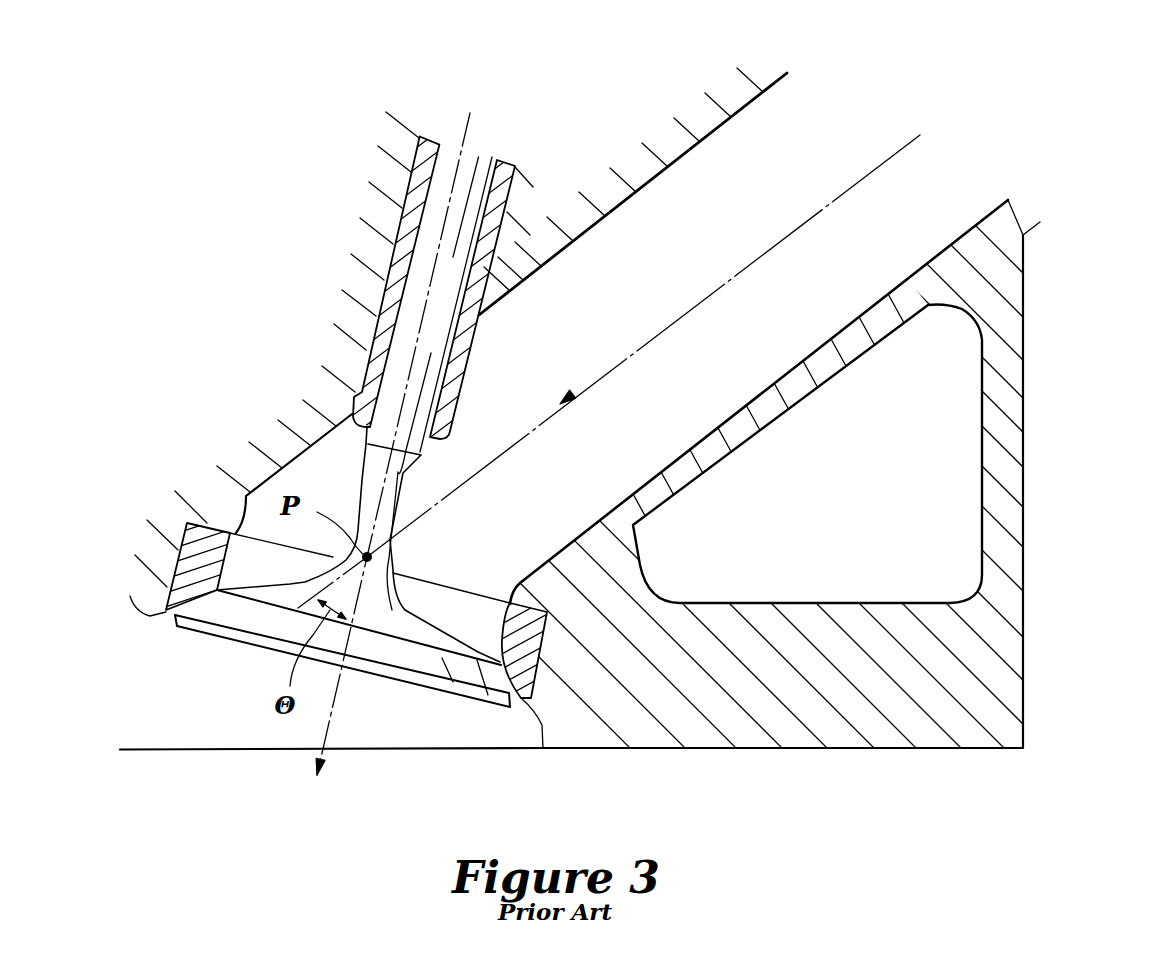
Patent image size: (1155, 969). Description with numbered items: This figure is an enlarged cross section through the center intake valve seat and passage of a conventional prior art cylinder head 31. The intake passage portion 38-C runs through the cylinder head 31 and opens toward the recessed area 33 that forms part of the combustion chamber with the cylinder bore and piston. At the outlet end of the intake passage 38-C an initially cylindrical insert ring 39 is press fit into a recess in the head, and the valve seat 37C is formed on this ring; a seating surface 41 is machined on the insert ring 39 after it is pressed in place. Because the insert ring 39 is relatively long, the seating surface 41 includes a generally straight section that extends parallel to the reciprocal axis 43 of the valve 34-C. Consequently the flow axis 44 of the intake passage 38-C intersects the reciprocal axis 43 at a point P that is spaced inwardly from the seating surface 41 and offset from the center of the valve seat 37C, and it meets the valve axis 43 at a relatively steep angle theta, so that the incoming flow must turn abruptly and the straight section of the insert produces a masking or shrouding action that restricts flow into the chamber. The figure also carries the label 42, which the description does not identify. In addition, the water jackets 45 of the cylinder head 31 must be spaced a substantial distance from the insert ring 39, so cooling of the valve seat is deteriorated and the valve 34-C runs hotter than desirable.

The cylinder head 31 is at (1016, 611).
The recessed area 33 is at (125, 734).
The valve 34-C is at (402, 677).
The valve seat 37C is at (192, 597).
The intake passage portion 38-C is at (893, 260).
The insert ring 39 is at (585, 584).
The seating surface 41 is at (170, 615).
The valve head surface 42 is at (490, 632).
The reciprocal axis 43 is at (468, 134).
The flow axis 44 is at (824, 204).
The water jackets 45 is at (805, 432).